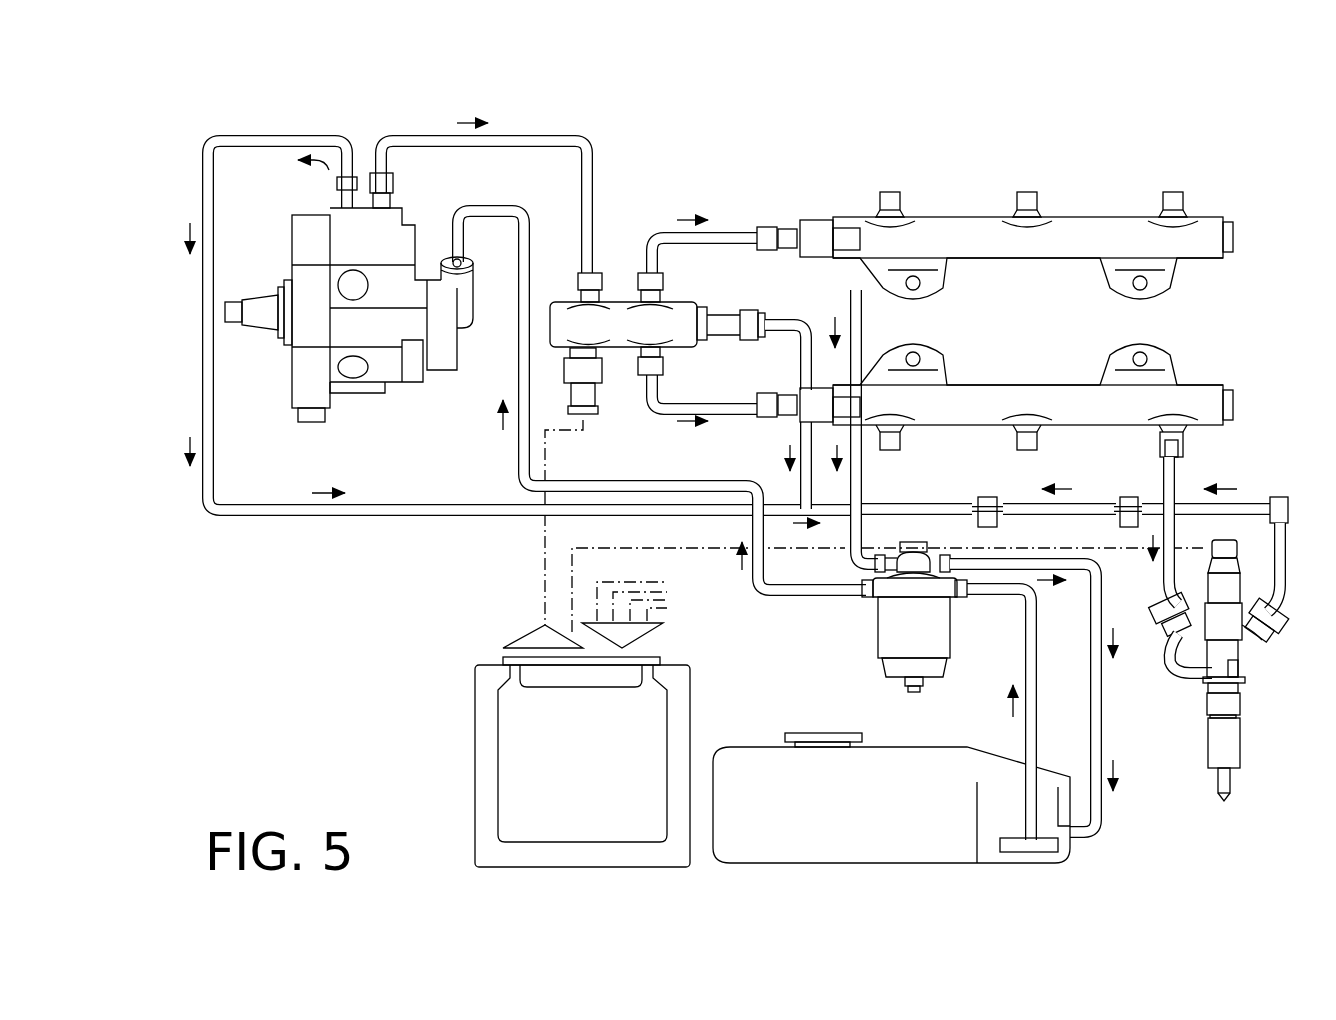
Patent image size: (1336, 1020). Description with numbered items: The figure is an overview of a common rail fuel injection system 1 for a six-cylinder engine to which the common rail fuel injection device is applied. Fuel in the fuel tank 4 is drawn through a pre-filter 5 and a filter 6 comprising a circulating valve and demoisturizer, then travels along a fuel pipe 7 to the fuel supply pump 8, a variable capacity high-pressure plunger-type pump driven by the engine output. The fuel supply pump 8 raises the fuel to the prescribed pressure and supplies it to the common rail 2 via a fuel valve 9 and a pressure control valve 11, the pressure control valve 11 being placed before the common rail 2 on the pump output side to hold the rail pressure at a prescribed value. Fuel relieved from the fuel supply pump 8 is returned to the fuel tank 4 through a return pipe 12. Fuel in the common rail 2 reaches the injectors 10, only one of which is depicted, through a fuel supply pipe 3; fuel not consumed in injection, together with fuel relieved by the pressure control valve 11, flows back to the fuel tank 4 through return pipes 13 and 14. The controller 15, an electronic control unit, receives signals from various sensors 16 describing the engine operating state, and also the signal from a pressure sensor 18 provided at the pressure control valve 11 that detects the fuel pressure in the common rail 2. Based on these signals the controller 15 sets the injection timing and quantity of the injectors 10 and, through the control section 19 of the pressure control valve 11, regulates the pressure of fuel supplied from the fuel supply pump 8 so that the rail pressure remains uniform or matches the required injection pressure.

The common rail fuel injection system 1 is at (1118, 125).
The common rail 2 is at (1062, 368).
The fuel supply pipe 3 is at (1163, 470).
The fuel tank 4 is at (848, 838).
The pre-filter 5 is at (1019, 848).
The filter 6 is at (887, 635).
The fuel pipe 7 is at (689, 480).
The fuel supply pump 8 is at (382, 393).
The fuel valve 9 is at (540, 136).
The injector 10 is at (1262, 732).
The pressure control valve 11 is at (682, 302).
The return pipe 12 is at (203, 347).
The return pipe 13 is at (940, 503).
The return pipe 14 is at (783, 320).
The controller 15 is at (508, 765).
The sensors 16 is at (670, 573).
The pressure sensor 18 is at (848, 243).
The control section 19 is at (586, 372).